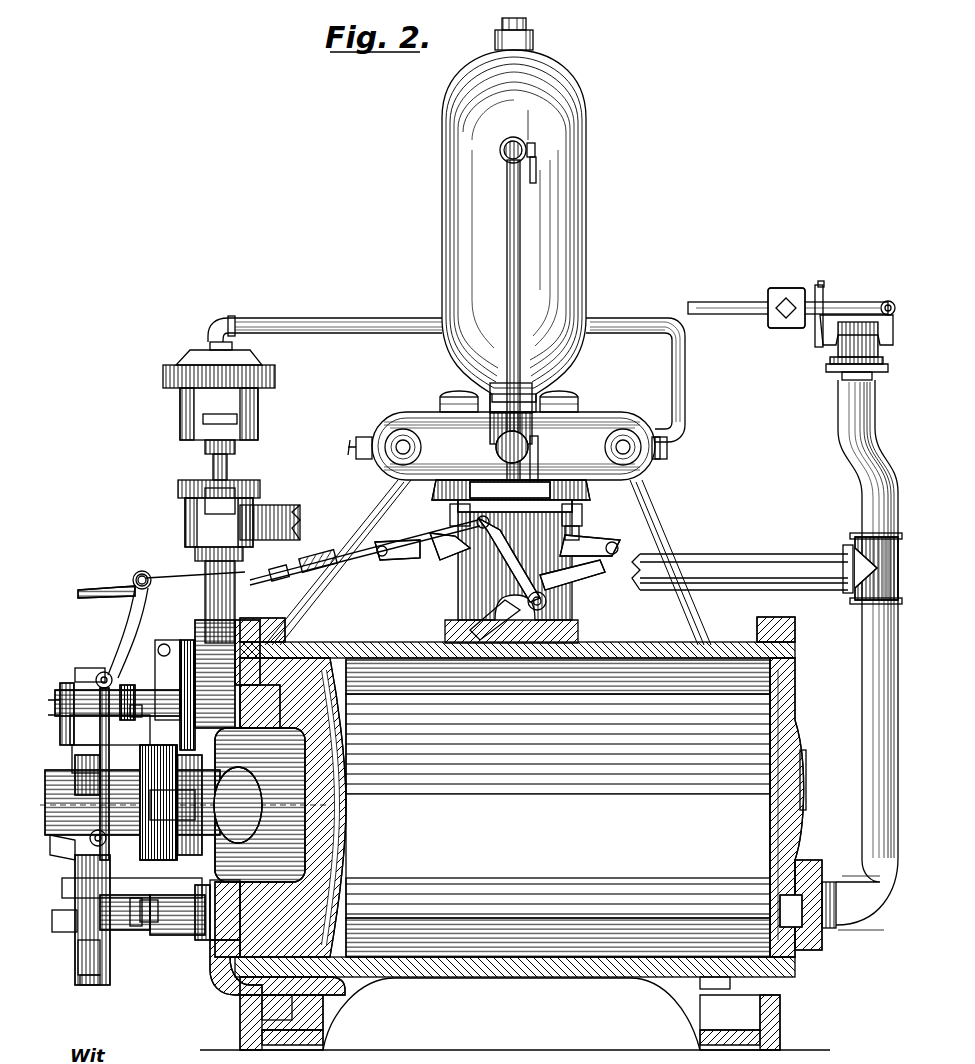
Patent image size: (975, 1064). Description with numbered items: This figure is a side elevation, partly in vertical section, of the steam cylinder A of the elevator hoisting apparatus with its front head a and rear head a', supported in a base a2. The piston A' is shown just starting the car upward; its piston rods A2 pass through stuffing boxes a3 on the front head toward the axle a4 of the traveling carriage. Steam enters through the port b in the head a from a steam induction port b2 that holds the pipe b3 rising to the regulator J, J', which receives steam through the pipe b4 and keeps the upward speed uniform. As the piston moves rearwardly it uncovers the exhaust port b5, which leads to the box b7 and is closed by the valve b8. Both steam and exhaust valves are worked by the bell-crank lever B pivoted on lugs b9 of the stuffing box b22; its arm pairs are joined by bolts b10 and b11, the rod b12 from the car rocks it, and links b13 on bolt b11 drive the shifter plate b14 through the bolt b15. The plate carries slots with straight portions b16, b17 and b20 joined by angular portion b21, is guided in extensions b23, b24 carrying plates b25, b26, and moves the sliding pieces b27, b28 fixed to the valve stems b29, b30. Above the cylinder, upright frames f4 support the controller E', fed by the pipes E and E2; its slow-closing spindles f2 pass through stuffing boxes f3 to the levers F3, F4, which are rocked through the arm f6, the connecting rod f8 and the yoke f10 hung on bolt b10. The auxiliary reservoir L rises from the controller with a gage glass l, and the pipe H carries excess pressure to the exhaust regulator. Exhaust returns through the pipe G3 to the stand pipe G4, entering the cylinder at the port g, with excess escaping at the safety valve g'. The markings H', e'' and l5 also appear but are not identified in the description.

The auxiliary reservoir L is at (514, 215).
The gage glass l is at (505, 236).
The pipe H' is at (635, 388).
The pipe H is at (353, 442).
The regulator portion J' is at (219, 415).
The regulator portion J is at (219, 520).
The steam supply pipe b4 is at (273, 513).
The pipe b3 is at (217, 602).
The controller E' is at (513, 434).
The pipe E is at (645, 536).
The pipe E2 is at (352, 547).
The caps e'' is at (526, 391).
The lever F3 is at (525, 560).
The lever F4 is at (408, 557).
The spindle f2 is at (575, 531).
The stuffing box f3 is at (512, 514).
The upright frame f4 is at (537, 600).
The arm f6 is at (511, 558).
The connecting rod f8 is at (365, 552).
The yoke f10 is at (195, 567).
The steam cylinder A is at (515, 809).
The piston A' is at (299, 787).
The piston rod A2 is at (185, 802).
The front head a is at (240, 938).
The rear head a' is at (794, 787).
The base a2 is at (515, 1014).
The stuffing box a3 is at (180, 803).
The axle a4 is at (511, 631).
The exhaust port g is at (808, 905).
The safety valve g' is at (791, 330).
The pipe G3 is at (767, 568).
The stand pipe G4 is at (867, 655).
The bell-crank lever B is at (132, 624).
The port b is at (260, 707).
The steam induction port b2 is at (240, 640).
The exhaust port b5 is at (292, 989).
The box b7 is at (180, 912).
The valve b8 is at (225, 910).
The lug b9 is at (172, 668).
The bolt b10 is at (144, 570).
The bolt b11 is at (103, 667).
The rod b12 is at (106, 580).
The link b13 is at (117, 774).
The shifter plate b14 is at (79, 881).
The bolt b15 is at (83, 845).
The lower straight slot portion b16 is at (74, 759).
The upper straight slot portion b17 is at (90, 668).
The lower straight slot portion b20 is at (107, 977).
The angular slot portion b21 is at (103, 957).
The stuffing box b22 is at (117, 702).
The extension b23 is at (125, 904).
The extension b24 is at (110, 730).
The plate b25 is at (127, 905).
The plate b26 is at (64, 691).
The sliding piece b27 is at (127, 911).
The sliding piece b28 is at (126, 688).
The valve stem b29 is at (136, 920).
The valve stem b30 is at (130, 713).
The passage l5 is at (715, 973).